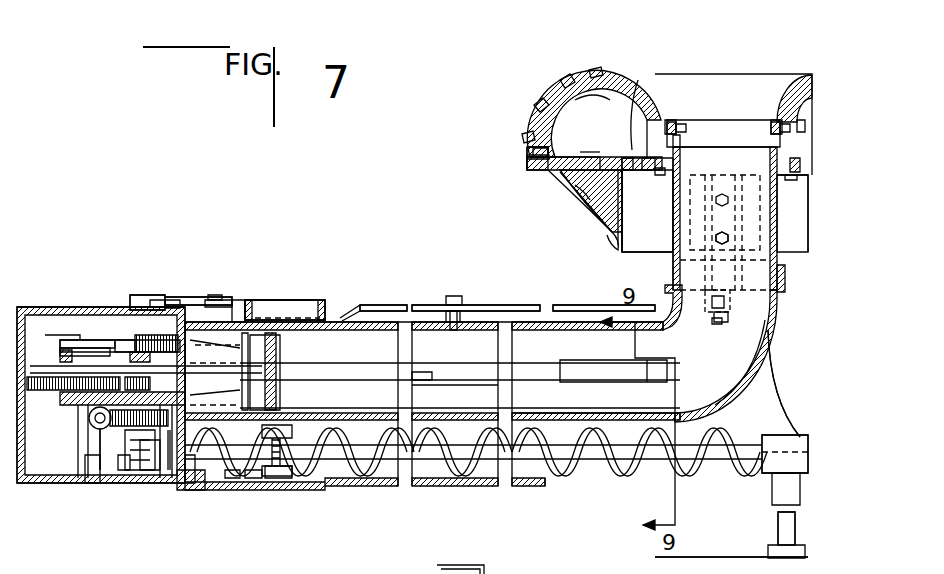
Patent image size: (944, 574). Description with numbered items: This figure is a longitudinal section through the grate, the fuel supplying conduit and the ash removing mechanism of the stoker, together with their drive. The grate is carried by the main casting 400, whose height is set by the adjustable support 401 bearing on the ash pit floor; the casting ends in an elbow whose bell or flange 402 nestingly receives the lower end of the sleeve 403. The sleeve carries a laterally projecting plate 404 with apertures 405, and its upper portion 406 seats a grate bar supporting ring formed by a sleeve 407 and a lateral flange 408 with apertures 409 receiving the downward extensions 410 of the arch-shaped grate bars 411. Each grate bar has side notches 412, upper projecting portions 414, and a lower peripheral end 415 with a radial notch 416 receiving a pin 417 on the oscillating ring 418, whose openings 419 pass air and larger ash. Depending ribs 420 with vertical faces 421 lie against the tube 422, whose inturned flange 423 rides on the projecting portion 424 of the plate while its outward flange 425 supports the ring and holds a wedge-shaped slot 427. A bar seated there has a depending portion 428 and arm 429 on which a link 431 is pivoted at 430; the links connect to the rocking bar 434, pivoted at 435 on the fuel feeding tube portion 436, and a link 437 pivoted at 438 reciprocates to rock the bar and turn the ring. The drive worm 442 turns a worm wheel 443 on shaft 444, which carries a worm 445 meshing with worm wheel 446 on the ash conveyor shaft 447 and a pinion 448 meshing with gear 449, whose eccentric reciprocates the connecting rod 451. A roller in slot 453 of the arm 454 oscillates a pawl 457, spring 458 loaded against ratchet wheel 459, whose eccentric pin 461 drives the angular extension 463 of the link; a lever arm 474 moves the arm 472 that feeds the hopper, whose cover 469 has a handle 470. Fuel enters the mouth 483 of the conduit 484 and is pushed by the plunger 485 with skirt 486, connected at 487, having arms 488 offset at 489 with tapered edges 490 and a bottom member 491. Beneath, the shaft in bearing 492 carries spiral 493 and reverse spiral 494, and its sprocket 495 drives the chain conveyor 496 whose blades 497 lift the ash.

The main casting 400 is at (768, 377).
The adjustable support 401 is at (770, 328).
The bell or flange 402 is at (782, 275).
The sleeve 403 is at (668, 258).
The laterally projecting flange or plate 404 is at (777, 180).
The apertures 405 is at (660, 172).
The upwardly extending sleeve portion 406 is at (772, 160).
The sleeve of grate bar supporting ring 407 is at (675, 145).
The lateral flange or plate 408 is at (800, 125).
The apertures 409 is at (672, 120).
The circular downwardly directed extension 410 is at (676, 128).
The grate bar 411 is at (583, 100).
The notches 412 is at (556, 100).
The projecting portions 414 is at (567, 72).
The lower end of outer periphery of grate bar 415 is at (548, 152).
The radial notch 416 is at (527, 158).
The pin or abutment 417 is at (530, 157).
The oscillating ring 418 is at (548, 172).
The openings 419 is at (592, 140).
The reenforcing ribs 420 is at (605, 195).
The vertical face 421 is at (617, 225).
The tube 422 is at (625, 245).
The inturned flange 423 is at (638, 80).
The projecting portion 424 is at (636, 180).
The flange 425 is at (580, 190).
The wedge-shaped tapered slot 427 is at (716, 300).
The vertical depending portion 428 is at (730, 248).
The outwardly projecting arm portion 429 is at (716, 325).
The pivot 430 is at (722, 322).
The link 431 is at (560, 305).
The rocking bar 434 is at (440, 318).
The pivot 435 is at (478, 306).
The fuel feeding tube portion 436 is at (430, 312).
The link 437 is at (383, 305).
The pivot 438 is at (458, 300).
The worm 442 is at (90, 487).
The worm wheel 443 is at (170, 487).
The shaft 444 is at (110, 487).
The worm 445 is at (125, 487).
The worm wheel 446 is at (158, 487).
The ash removing conveyor shaft 447 is at (195, 490).
The pinion 448 is at (150, 385).
The gear 449 is at (58, 380).
The connecting rod 451 is at (192, 298).
The elongated slot 453 is at (60, 300).
The arm 454 is at (38, 307).
The pawl 457 is at (100, 300).
The spring 458 is at (78, 300).
The ratchet wheel 459 is at (172, 300).
The eccentric pin 461 is at (122, 300).
The angular extension 463 is at (162, 300).
The cover 469 is at (707, 565).
The handle 470 is at (485, 570).
The arm 472 is at (222, 300).
The lever arm 474 is at (215, 295).
The mouth 483 is at (283, 300).
The fuel supplying conduit 484 is at (368, 322).
The plunger or ram 485 is at (268, 300).
The skirt 486 is at (238, 298).
The connection 487 is at (280, 350).
The arms 488 is at (462, 372).
The offset portion 489 is at (432, 372).
The inwardly tapered edge 490 is at (654, 366).
The bottom member 491 is at (525, 415).
The bearing 492 is at (768, 468).
The worm or spiral 493 is at (437, 480).
The reverse spiral 494 is at (232, 490).
The sprocket 495 is at (250, 490).
The chain conveyor 496 is at (280, 490).
The blades 497 is at (285, 425).